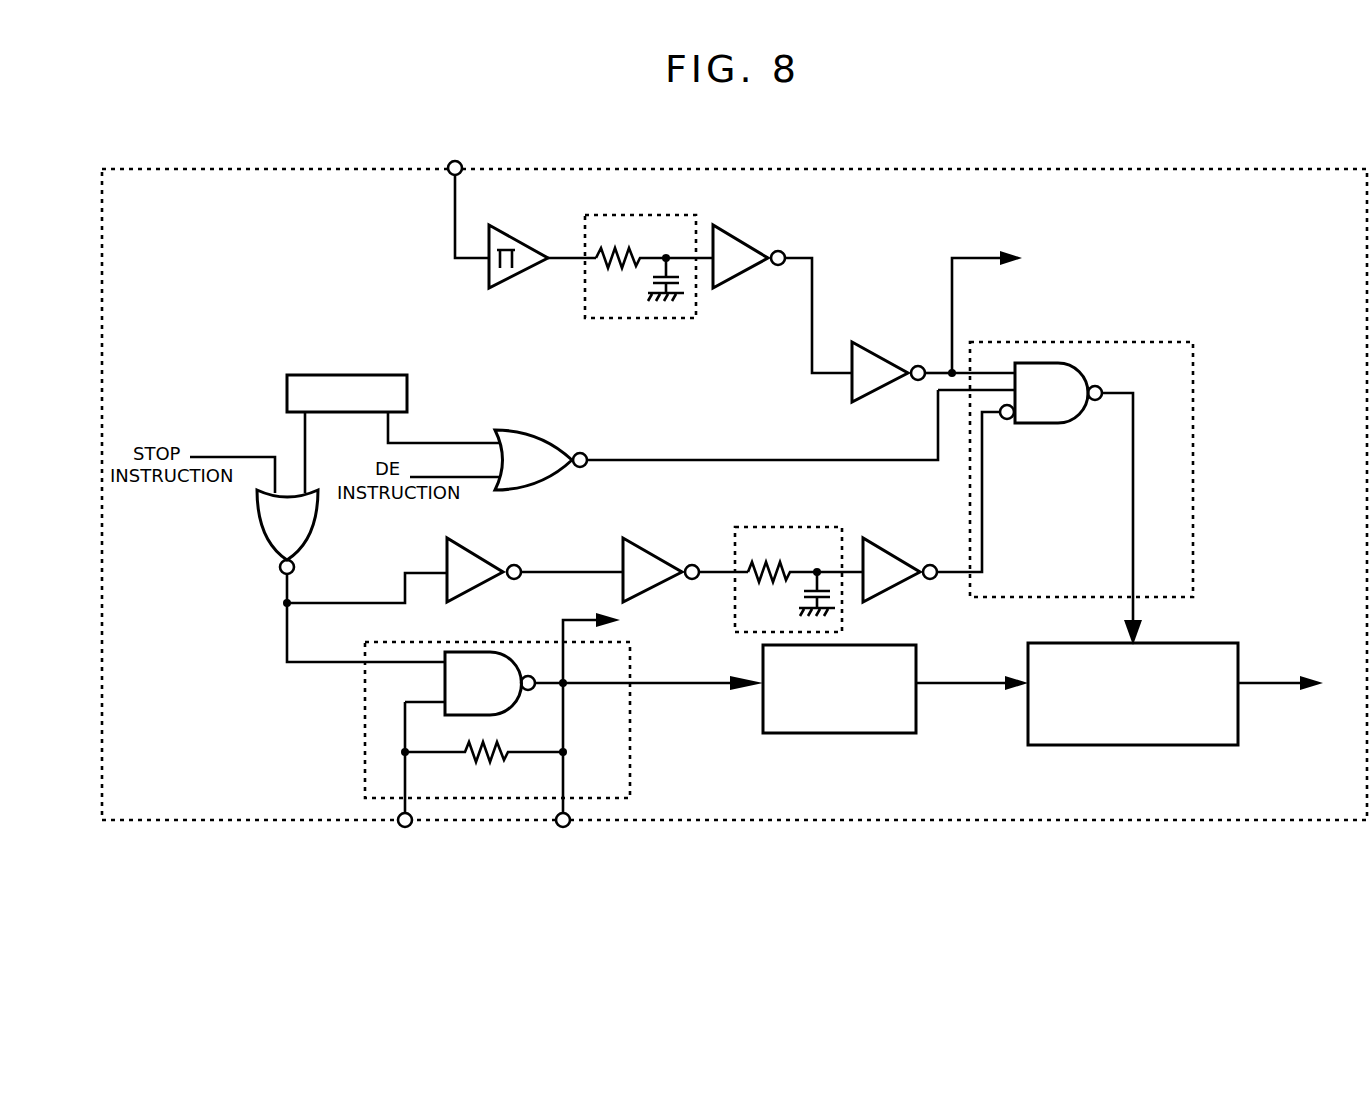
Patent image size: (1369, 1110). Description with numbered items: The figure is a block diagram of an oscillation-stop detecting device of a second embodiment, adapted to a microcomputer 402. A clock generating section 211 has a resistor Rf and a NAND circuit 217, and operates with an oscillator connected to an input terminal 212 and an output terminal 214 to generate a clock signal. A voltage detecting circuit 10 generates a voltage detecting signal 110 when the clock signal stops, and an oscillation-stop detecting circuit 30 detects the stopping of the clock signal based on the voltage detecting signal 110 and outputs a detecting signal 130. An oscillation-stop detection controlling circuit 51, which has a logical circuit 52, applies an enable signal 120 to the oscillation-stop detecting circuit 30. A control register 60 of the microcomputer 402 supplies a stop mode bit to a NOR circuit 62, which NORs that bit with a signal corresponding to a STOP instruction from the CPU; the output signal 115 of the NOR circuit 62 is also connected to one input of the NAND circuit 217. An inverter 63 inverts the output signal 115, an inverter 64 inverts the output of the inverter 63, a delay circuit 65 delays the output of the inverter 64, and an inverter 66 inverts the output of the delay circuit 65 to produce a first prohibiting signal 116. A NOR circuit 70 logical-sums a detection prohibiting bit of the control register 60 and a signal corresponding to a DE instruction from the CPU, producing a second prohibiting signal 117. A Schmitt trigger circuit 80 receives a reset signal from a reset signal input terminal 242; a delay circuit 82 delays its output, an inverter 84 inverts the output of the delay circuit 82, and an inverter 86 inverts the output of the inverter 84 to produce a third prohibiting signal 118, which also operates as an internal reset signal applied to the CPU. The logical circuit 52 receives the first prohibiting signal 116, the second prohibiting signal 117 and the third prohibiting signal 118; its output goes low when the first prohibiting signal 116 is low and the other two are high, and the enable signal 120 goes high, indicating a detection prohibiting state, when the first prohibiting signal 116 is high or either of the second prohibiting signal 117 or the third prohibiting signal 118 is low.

The voltage detecting circuit 10 is at (824, 735).
The oscillation-stop detecting circuit 30 is at (1152, 746).
The oscillation-stop detection controlling circuit 51 is at (1193, 450).
The logical circuit 52 is at (1082, 378).
The control register 60 is at (333, 373).
The NOR circuit 62 is at (262, 530).
The inverter 63 is at (490, 555).
The inverter 64 is at (648, 548).
The delay circuit 65 is at (778, 525).
The inverter 66 is at (898, 550).
The NOR circuit 70 is at (530, 440).
The Schmitt trigger circuit 80 is at (508, 278).
The delay circuit 82 is at (628, 320).
The inverter 84 is at (755, 245).
The inverter 86 is at (872, 353).
The voltage detecting signal 110 is at (986, 688).
The output signal 115 is at (355, 600).
The first prohibiting signal 116 is at (988, 482).
The second prohibiting signal 117 is at (712, 458).
The third prohibiting signal 118 is at (990, 372).
The enable signal 120 is at (1140, 608).
The detecting signal 130 is at (1268, 688).
The clock generating section 211 is at (365, 742).
The input terminal 212 is at (412, 826).
The output terminal 214 is at (570, 826).
The NAND circuit 217 is at (478, 652).
The reset signal input terminal 242 is at (462, 163).
The microcomputer 402 is at (1137, 168).